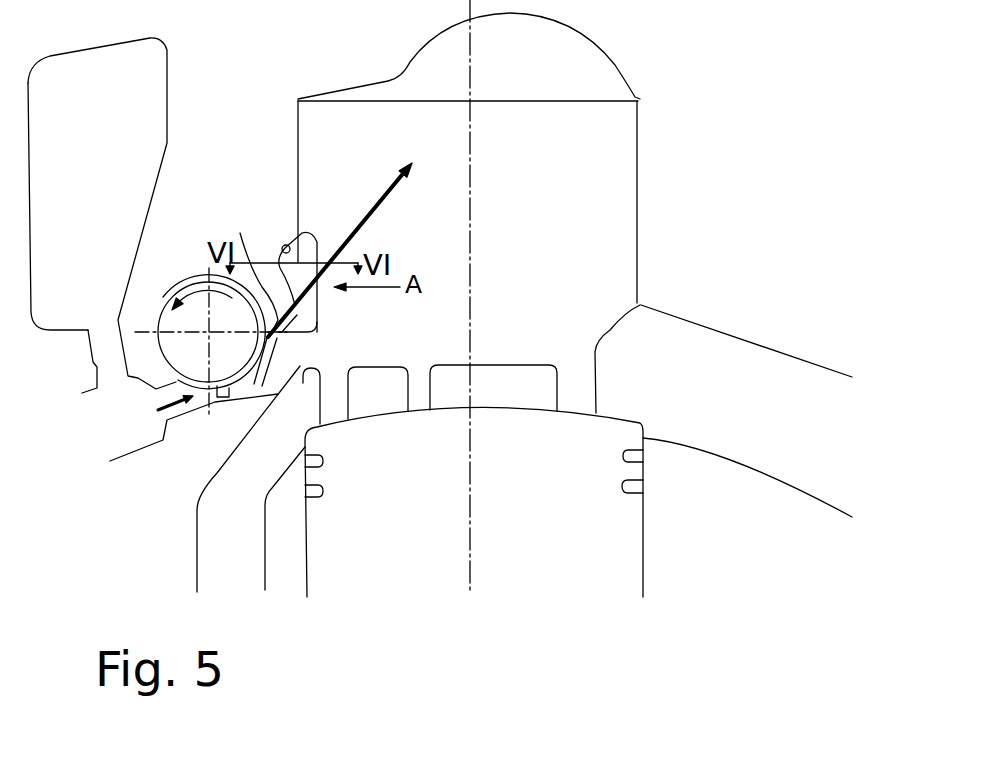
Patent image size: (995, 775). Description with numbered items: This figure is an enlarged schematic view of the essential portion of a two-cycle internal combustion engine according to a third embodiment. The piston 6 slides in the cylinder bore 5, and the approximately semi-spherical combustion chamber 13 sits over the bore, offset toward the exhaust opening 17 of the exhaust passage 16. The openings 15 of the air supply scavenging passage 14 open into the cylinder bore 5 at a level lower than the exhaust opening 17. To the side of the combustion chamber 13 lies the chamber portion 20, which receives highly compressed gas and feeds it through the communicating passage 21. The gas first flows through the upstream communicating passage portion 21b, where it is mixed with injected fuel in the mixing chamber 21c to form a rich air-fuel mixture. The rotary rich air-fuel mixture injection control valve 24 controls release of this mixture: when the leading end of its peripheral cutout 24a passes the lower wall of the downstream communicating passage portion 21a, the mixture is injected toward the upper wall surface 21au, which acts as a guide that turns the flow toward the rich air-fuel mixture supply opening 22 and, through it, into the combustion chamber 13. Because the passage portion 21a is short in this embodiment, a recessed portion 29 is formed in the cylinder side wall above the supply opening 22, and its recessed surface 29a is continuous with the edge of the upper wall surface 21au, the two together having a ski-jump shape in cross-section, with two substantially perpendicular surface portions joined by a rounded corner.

The cylinder bore 5 is at (637, 158).
The piston 6 is at (515, 427).
The combustion chamber 13 is at (532, 88).
The air supply scavenging passage 14 is at (252, 553).
The openings 15 is at (323, 378).
The exhaust passage 16 is at (778, 431).
The exhaust opening 17 is at (617, 340).
The chamber portion 20 is at (108, 183).
The communicating passage 21 is at (149, 460).
The communicating passage portion 21a is at (297, 315).
The upper wall surface 21au is at (240, 233).
The communicating passage portion 21b is at (103, 365).
The mixing chamber 21c is at (103, 432).
The rich air-fuel mixture supply opening 22 is at (297, 302).
The rich air-fuel mixture injection control valve 24 is at (205, 313).
The peripheral cutout 24a is at (213, 400).
The recessed portion 29 is at (325, 232).
The recessed surface 29a is at (286, 245).